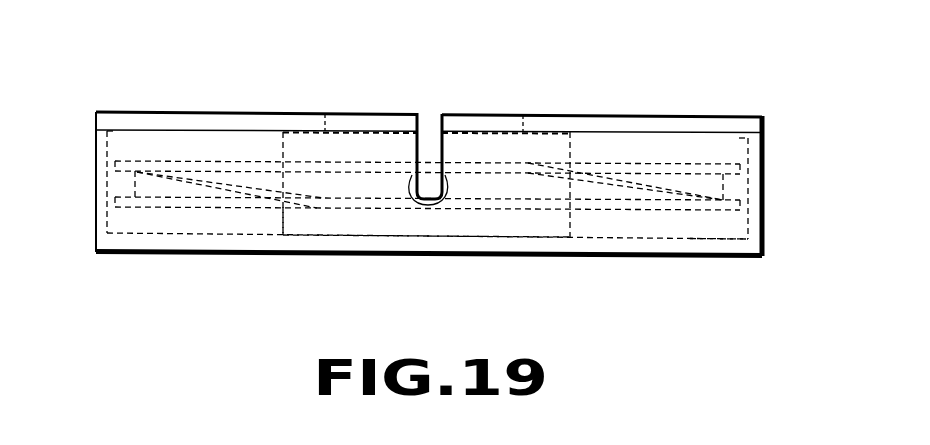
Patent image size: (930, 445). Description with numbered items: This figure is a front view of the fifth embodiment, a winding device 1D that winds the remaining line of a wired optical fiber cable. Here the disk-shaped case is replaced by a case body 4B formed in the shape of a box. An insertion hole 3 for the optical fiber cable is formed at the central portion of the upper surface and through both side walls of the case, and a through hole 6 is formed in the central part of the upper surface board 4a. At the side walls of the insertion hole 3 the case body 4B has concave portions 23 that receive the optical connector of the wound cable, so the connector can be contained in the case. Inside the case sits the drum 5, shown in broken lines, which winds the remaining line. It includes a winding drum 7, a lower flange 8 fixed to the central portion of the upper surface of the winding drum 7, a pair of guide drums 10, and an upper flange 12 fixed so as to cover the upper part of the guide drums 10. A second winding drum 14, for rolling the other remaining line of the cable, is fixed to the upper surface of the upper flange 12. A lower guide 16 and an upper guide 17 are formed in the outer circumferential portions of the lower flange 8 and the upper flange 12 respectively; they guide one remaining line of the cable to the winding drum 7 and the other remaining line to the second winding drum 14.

The winding device 1D is at (662, 76).
The upper surface board 4a is at (702, 118).
The case body 4B is at (634, 258).
The insertion hole 3 is at (430, 188).
The concave portion 23 is at (432, 186).
The upper flange 12 is at (745, 150).
The second winding drum 14 is at (292, 129).
The through hole 6 is at (515, 127).
The drum 5 is at (208, 152).
The guide drum 10 is at (135, 183).
The lower guide 16 is at (232, 186).
The upper guide 17 is at (610, 200).
The winding drum 7 is at (283, 222).
The lower flange 8 is at (703, 213).